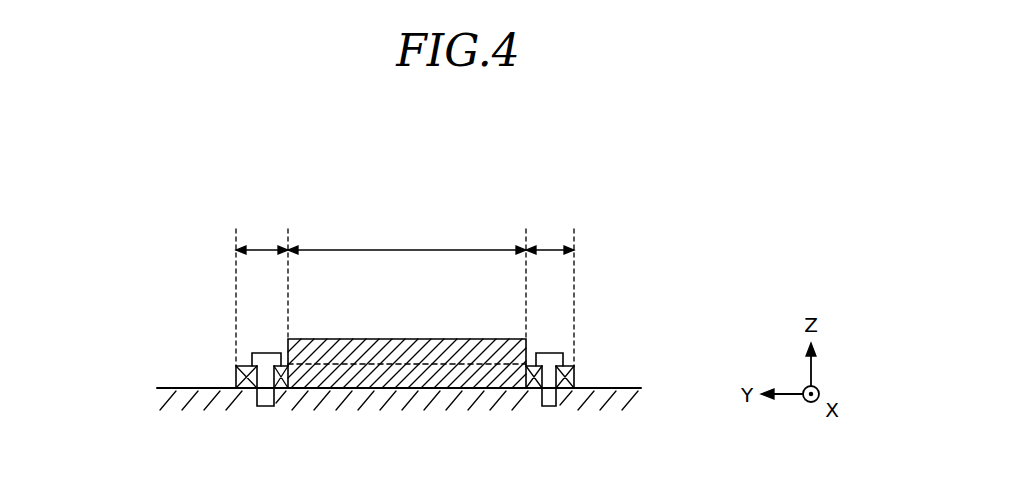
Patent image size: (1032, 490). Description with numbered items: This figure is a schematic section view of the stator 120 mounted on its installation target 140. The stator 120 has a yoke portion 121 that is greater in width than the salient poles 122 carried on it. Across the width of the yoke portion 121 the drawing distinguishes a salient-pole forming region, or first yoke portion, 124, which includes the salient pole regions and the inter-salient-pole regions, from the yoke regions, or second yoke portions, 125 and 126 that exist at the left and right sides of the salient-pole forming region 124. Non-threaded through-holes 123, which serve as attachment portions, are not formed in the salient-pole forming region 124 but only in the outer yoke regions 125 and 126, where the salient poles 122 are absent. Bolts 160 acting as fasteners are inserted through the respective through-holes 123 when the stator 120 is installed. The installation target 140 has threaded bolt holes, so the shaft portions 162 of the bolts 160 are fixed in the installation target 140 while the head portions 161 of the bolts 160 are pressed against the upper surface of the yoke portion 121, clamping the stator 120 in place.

The stator 120 is at (598, 274).
The yoke portion 121 is at (372, 378).
The salient poles 122 is at (368, 339).
The through-holes 123 is at (240, 368).
The salient-pole forming region 124 is at (408, 246).
The yoke region 125 is at (258, 246).
The yoke region 126 is at (548, 246).
The installation target 140 is at (619, 387).
The bolts 160 is at (405, 375).
The head portions 161 is at (305, 362).
The shaft portions 162 is at (262, 405).